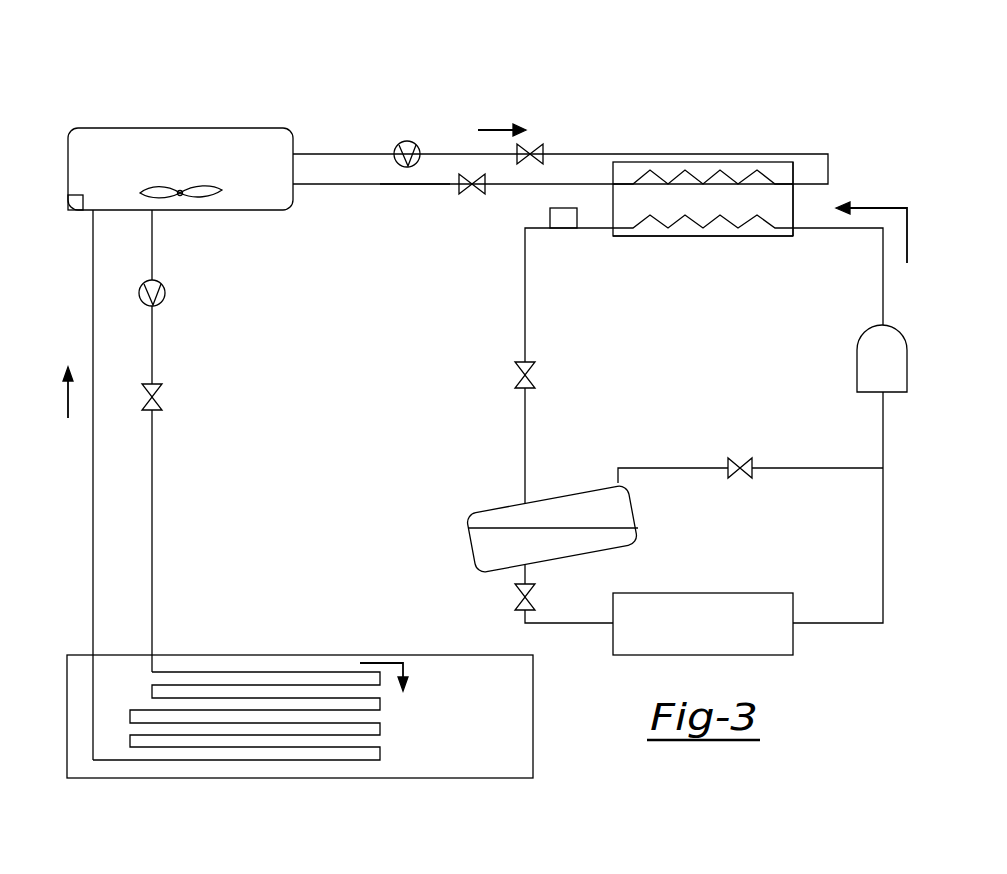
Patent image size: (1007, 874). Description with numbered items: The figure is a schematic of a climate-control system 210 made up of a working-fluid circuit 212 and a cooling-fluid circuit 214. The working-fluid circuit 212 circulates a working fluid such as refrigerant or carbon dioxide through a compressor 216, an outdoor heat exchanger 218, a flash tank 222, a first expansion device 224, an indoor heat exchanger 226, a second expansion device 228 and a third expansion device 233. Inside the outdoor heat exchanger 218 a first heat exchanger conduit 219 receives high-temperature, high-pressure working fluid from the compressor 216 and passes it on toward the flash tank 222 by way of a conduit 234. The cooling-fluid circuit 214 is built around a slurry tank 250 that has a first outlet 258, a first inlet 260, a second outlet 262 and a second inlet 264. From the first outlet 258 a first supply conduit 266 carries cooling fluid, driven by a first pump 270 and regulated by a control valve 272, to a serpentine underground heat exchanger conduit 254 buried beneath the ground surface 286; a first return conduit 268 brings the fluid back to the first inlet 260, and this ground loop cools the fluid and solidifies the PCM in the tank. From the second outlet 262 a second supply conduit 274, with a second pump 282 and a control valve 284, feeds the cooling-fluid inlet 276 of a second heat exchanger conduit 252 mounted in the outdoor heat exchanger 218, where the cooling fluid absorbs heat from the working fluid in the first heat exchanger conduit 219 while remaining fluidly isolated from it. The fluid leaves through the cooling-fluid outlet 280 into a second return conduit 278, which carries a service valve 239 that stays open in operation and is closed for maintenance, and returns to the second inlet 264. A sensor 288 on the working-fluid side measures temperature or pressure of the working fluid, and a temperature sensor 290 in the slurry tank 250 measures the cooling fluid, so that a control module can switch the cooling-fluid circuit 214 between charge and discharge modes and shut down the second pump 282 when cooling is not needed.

The climate-control system 210 is at (350, 84).
The working-fluid circuit 212 is at (909, 585).
The cooling-fluid circuit 214 is at (63, 102).
The compressor 216 is at (856, 361).
The outdoor heat exchanger 218 is at (640, 237).
The first heat exchanger conduit 219 is at (690, 219).
The flash tank 222 is at (470, 548).
The first expansion device 224 is at (525, 597).
The indoor heat exchanger 226 is at (765, 593).
The second expansion device 228 is at (740, 458).
The third expansion device 233 is at (525, 375).
The conduit 234 is at (525, 305).
The service valve 239 is at (472, 195).
The slurry tank 250 is at (210, 127).
The second heat exchanger conduit 252 is at (740, 185).
The underground heat exchanger conduit 254 is at (380, 728).
The first outlet 258 is at (152, 212).
The first inlet 260 is at (93, 212).
The second outlet 262 is at (297, 154).
The second inlet 264 is at (297, 184).
The first supply conduit 266 is at (152, 533).
The first return conduit 268 is at (93, 575).
The first pump 270 is at (165, 293).
The control valve 272 is at (158, 397).
The second supply conduit 274 is at (722, 154).
The cooling-fluid inlet 276 is at (793, 180).
The second return conduit 278 is at (420, 185).
The cooling-fluid outlet 280 is at (613, 178).
The second pump 282 is at (405, 140).
The control valve 284 is at (530, 143).
The ground surface 286 is at (245, 655).
The sensor 288 is at (562, 207).
The temperature sensor 290 is at (75, 211).